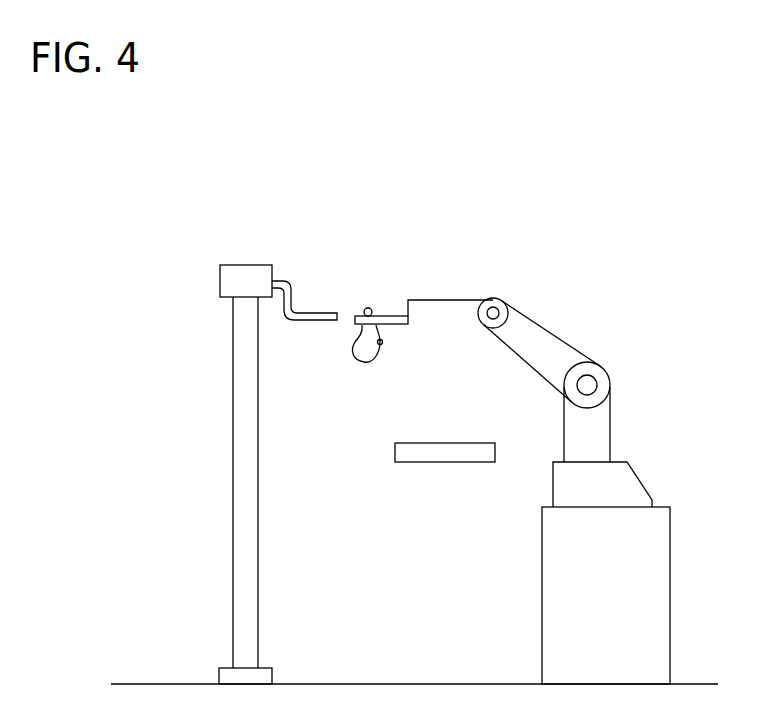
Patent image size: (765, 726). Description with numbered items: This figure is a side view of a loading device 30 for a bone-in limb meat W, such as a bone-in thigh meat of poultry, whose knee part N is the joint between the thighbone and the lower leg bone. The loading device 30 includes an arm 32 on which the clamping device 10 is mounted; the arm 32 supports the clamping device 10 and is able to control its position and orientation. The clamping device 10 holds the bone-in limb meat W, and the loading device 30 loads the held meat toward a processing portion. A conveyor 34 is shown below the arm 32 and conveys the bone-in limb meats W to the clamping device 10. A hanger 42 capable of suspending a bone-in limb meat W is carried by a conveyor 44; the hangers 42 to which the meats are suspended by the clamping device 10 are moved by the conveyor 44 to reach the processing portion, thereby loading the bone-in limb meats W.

The clamping device 10 is at (391, 314).
The loading device 30 is at (576, 463).
The arm 32 is at (520, 318).
The conveyor 34 is at (442, 462).
The hanger 42 is at (302, 312).
The conveyor 44 is at (236, 265).
The knee part N is at (383, 343).
The bone-in limb meat W is at (363, 362).